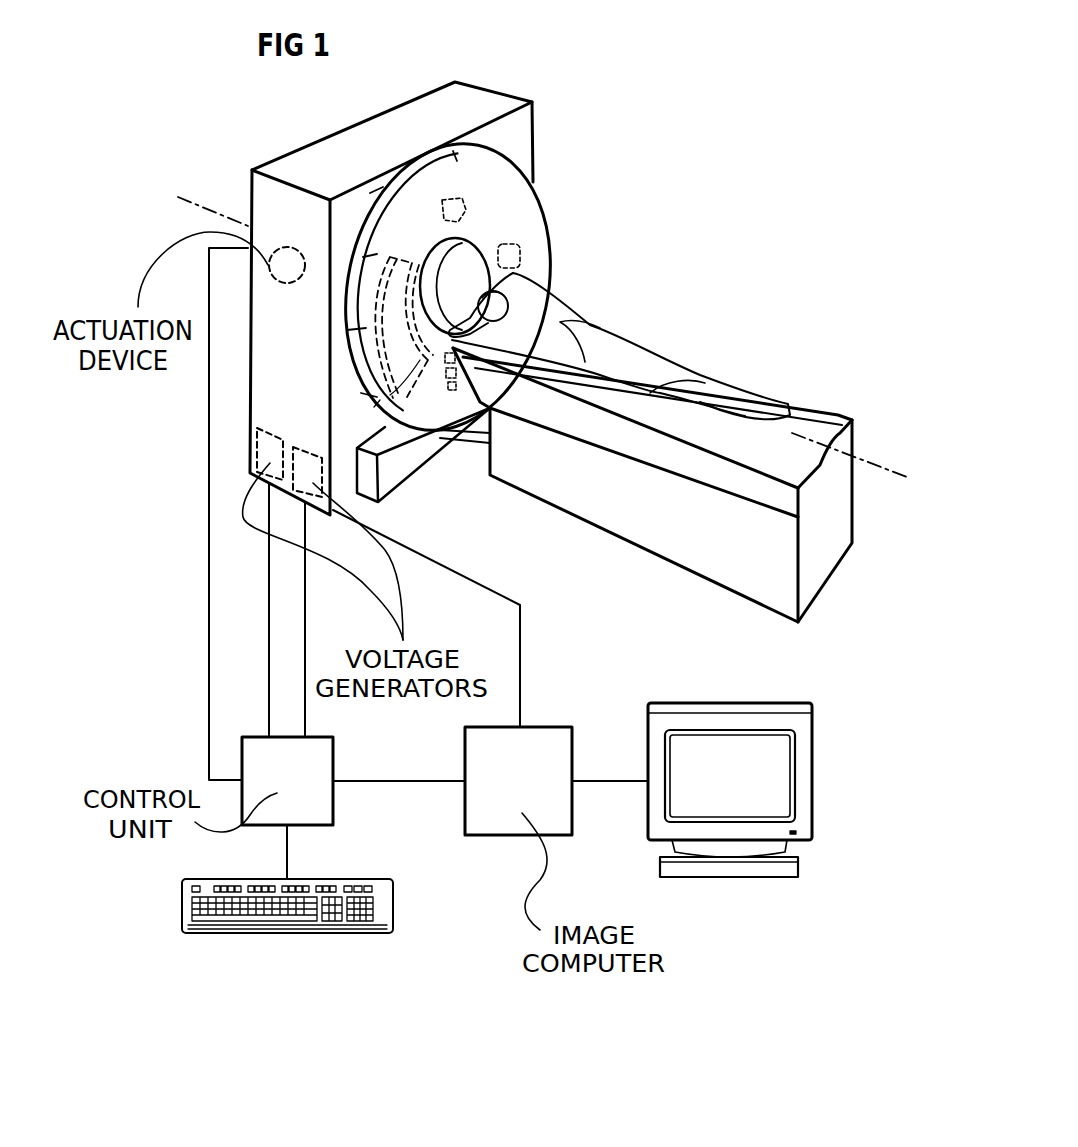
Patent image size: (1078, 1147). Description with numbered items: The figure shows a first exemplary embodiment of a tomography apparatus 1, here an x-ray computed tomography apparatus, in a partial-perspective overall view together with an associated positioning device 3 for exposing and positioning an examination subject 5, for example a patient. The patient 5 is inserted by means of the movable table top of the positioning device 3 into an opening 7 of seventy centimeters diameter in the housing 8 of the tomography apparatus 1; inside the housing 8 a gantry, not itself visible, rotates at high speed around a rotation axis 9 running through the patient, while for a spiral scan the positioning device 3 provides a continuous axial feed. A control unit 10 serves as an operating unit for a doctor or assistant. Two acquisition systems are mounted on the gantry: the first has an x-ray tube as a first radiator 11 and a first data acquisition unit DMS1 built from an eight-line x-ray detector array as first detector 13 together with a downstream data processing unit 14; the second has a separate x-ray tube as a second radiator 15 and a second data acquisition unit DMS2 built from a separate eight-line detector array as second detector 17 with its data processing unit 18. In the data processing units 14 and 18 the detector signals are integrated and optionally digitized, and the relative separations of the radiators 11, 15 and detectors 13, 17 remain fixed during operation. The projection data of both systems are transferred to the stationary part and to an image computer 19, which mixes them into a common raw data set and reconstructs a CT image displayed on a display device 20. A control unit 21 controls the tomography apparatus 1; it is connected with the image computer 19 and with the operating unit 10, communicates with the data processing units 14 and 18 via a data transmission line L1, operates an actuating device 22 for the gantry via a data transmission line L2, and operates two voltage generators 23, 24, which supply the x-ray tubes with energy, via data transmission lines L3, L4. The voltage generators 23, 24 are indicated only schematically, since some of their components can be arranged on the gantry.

The tomography apparatus 1 is at (700, 245).
The positioning device 3 is at (547, 488).
The examination subject 5 is at (567, 318).
The opening 7 is at (462, 278).
The housing 8 is at (258, 194).
The rotation axis 9 is at (887, 468).
The control unit 10 is at (387, 905).
The first radiator 11 is at (452, 197).
The first detector 13 is at (433, 397).
The data processing unit 14 is at (470, 425).
The second radiator 15 is at (518, 260).
The second detector 17 is at (374, 407).
The data processing unit 18 is at (420, 392).
The image computer 19 is at (572, 815).
The display device 20 is at (805, 774).
The control unit 21 is at (333, 790).
The actuating device 22 is at (285, 283).
The voltage generator 23 is at (310, 447).
The voltage generator 24 is at (275, 428).
The first data acquisition unit DMS1 is at (430, 395).
The second data acquisition unit DMS2 is at (402, 245).
The data transmission line L1 is at (462, 577).
The data transmission line L2 is at (209, 682).
The data transmission line L3 is at (269, 606).
The data transmission line L4 is at (305, 606).